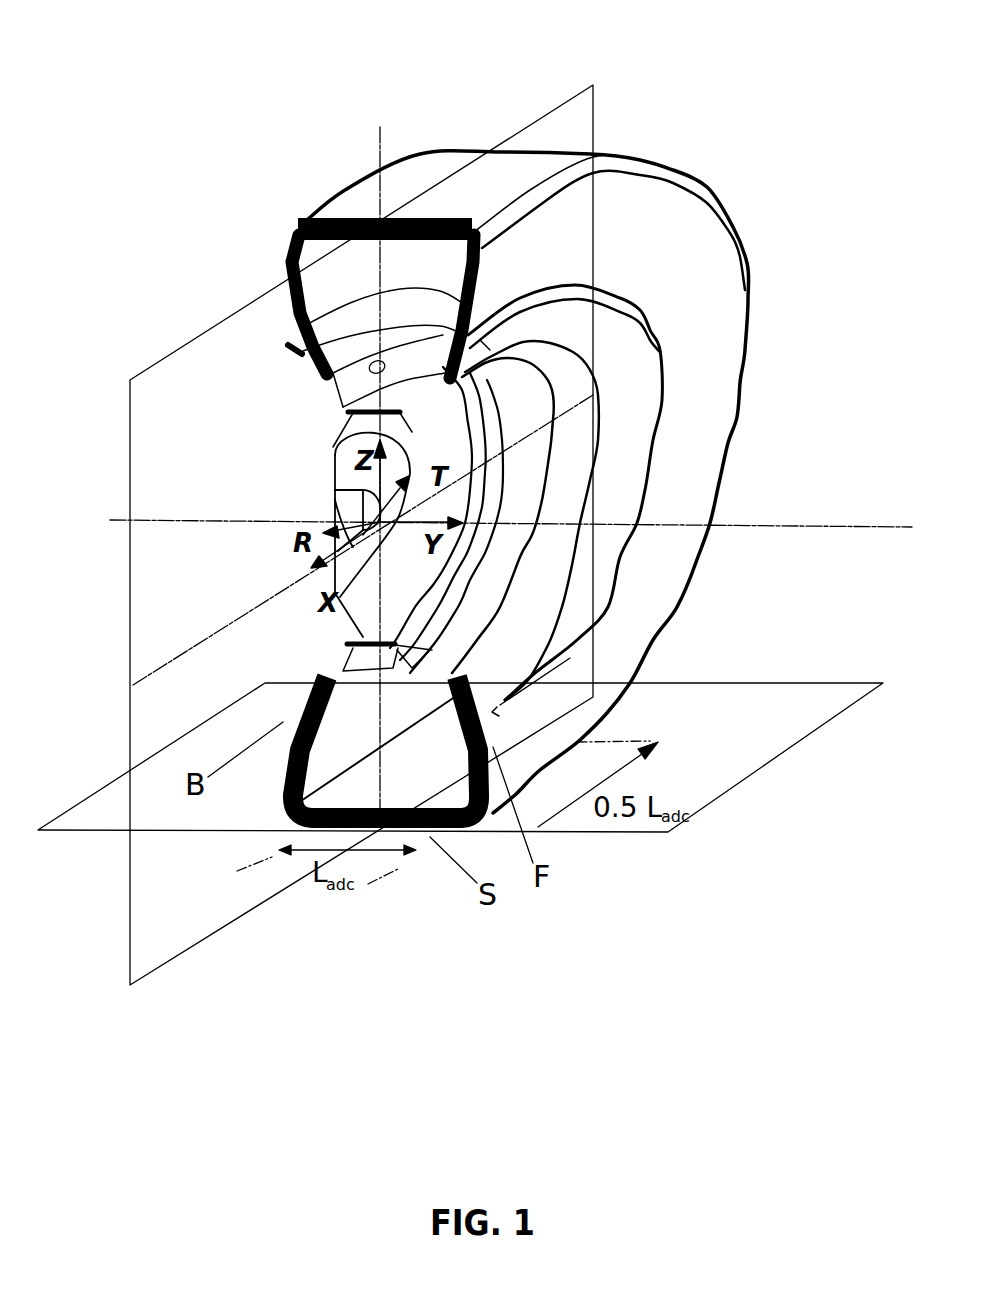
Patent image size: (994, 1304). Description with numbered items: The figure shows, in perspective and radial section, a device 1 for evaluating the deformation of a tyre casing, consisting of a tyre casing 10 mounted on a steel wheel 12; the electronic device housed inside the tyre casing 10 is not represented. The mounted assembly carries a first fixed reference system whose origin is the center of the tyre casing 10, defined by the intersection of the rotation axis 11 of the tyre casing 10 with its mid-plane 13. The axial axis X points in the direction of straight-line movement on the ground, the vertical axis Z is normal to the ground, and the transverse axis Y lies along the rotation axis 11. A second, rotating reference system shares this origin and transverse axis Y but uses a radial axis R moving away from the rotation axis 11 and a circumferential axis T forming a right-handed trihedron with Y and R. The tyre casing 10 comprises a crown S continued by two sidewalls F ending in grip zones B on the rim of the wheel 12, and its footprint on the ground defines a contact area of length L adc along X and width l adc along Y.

The device for evaluating the deformation of a tyre casing 1 is at (363, 66).
The tyre casing 10 is at (635, 618).
The rotation axis 11 is at (752, 533).
The wheel 12 is at (452, 430).
The mid-plane 13 is at (553, 133).